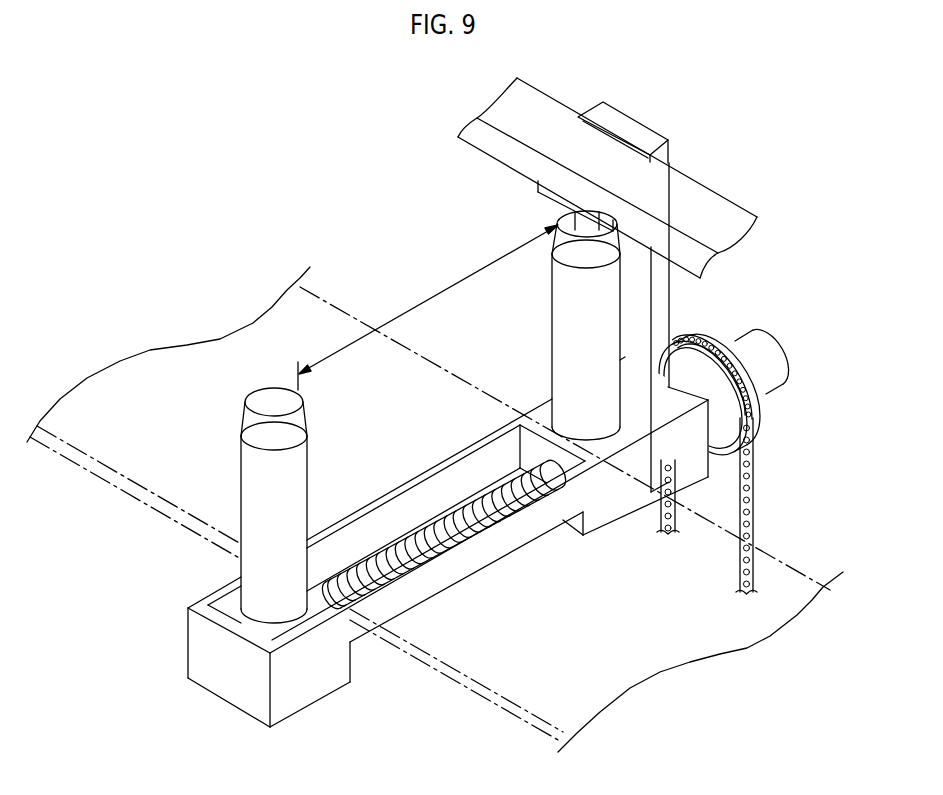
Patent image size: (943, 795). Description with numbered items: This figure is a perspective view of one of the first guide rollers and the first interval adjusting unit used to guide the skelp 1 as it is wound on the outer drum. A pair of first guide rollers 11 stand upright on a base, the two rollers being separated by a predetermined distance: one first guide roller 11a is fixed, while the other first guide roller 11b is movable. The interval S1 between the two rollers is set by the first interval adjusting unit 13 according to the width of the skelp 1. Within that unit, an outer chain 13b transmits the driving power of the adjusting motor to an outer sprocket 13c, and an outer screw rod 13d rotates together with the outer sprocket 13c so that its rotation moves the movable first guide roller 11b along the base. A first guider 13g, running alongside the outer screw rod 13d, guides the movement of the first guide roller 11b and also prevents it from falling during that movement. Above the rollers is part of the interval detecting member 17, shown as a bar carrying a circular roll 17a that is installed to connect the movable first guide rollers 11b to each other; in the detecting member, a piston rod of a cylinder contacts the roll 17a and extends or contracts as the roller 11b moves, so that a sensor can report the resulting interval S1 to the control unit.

The skelp 1 is at (195, 360).
The first guide rollers 11 is at (375, 250).
The first guide roller 11a is at (253, 492).
The first guide roller 11b is at (560, 303).
The first interval adjusting unit 13 is at (778, 309).
The outer chain 13b is at (753, 491).
The outer sprocket 13c is at (762, 405).
The outer screw rod 13d is at (448, 560).
The first guider 13g is at (423, 477).
The interval detecting member 17 is at (739, 174).
The circular roll 17a is at (680, 192).
The interval S1 is at (428, 307).